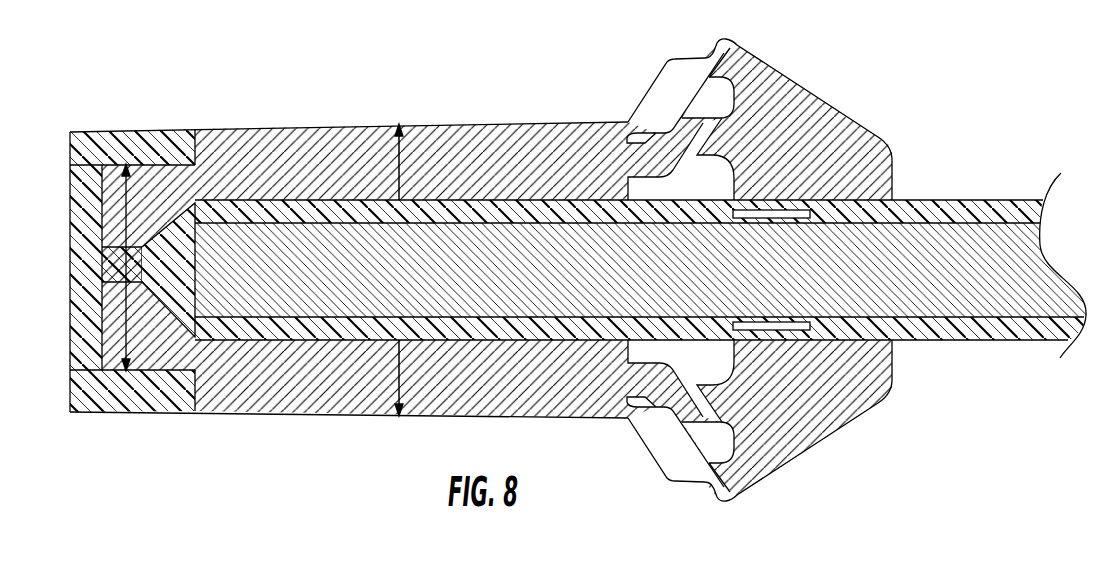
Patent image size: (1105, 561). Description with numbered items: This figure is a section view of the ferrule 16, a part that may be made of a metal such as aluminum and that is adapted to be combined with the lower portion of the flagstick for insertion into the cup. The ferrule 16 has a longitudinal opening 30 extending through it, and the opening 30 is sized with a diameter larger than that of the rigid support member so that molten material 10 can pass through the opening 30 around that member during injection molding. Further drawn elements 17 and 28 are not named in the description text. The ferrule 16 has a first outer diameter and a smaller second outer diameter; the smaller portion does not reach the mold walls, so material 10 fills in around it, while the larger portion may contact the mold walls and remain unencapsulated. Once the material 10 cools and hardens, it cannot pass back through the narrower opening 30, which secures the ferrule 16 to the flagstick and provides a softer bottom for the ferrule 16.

The molten material 10 is at (571, 455).
The ferrule 16 is at (438, 72).
The tube / cable 17 is at (970, 220).
The channel 28 is at (798, 212).
The longitudinal opening 30 is at (901, 346).